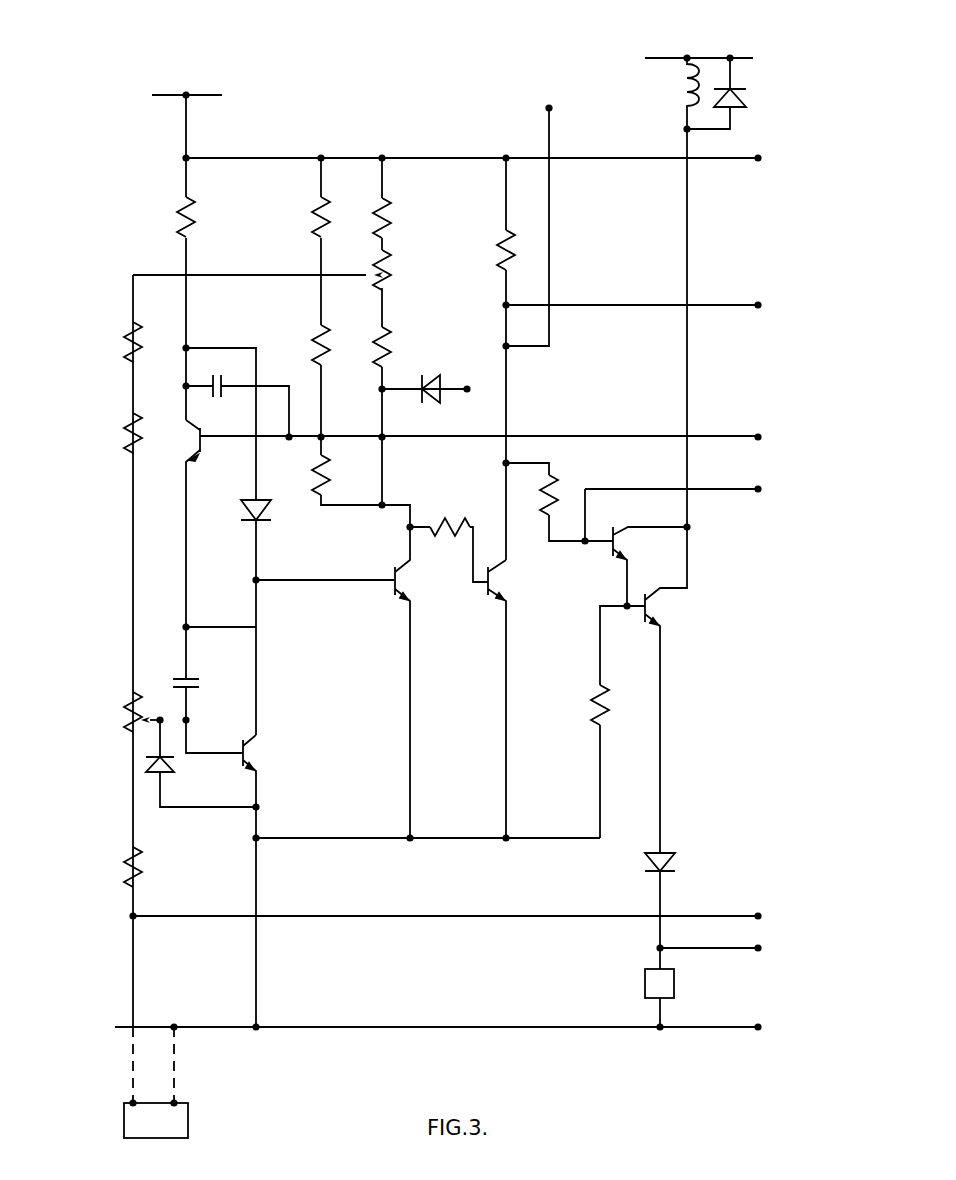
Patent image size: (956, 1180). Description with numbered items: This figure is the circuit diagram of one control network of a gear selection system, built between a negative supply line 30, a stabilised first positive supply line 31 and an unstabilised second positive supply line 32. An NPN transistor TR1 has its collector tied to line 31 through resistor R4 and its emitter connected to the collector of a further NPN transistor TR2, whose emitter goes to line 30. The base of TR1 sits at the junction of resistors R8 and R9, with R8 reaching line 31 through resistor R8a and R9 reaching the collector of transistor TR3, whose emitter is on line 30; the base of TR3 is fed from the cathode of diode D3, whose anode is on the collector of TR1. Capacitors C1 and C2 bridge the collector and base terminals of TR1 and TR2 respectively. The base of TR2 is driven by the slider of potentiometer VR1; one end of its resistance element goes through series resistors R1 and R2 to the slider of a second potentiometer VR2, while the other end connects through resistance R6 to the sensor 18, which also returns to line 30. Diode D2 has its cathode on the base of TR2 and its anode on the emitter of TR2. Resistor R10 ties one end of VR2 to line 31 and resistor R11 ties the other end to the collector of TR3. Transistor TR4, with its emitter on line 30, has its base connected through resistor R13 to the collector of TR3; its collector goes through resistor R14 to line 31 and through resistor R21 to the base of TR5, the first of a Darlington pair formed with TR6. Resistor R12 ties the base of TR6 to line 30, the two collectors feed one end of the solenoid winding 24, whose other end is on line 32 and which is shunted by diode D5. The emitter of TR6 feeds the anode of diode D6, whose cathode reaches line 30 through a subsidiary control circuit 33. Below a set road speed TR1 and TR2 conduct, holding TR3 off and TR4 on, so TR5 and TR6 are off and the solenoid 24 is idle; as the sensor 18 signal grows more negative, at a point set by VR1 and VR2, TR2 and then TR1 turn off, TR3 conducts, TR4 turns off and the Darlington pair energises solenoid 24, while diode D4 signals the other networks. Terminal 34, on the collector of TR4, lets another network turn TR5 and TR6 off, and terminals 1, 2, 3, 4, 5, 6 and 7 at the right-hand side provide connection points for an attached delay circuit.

The first positive supply line 31 is at (187, 95).
The second positive supply line 32 is at (667, 58).
The terminal 34 is at (546, 106).
The solenoid winding 24 is at (676, 94).
The diode D5 is at (744, 104).
The terminal 1 is at (776, 160).
The terminal 3 is at (776, 307).
The terminal 5 is at (776, 439).
The terminal 4 is at (776, 491).
The terminal 7 is at (776, 919).
The terminal 6 is at (776, 950).
The terminal 2 is at (776, 1029).
The resistor R4 is at (179, 225).
The resistor R8a is at (312, 225).
The resistor R8 is at (314, 334).
The resistor R9 is at (330, 480).
The resistor R10 is at (394, 224).
The second potentiometer VR2 is at (394, 282).
The resistor R11 is at (394, 344).
The diode D4 is at (440, 386).
The resistor R1 is at (140, 346).
The resistor R2 is at (140, 440).
The capacitor C1 is at (222, 388).
The NPN transistor TR1 is at (192, 454).
The diode D3 is at (258, 506).
The capacitor C2 is at (200, 684).
The potentiometer VR1 is at (128, 712).
The diode D2 is at (166, 761).
The NPN transistor TR2 is at (254, 762).
The resistance R6 is at (146, 872).
The NPN transistor TR3 is at (402, 595).
The resistor R13 is at (460, 502).
The resistor R14 is at (512, 246).
The NPN transistor TR4 is at (499, 595).
The resistor R21 is at (564, 500).
The NPN transistor TR5 is at (621, 545).
The NPN transistor TR6 is at (655, 616).
The resistor R12 is at (608, 710).
The diode D6 is at (664, 850).
The subsidiary control circuit 33 is at (674, 986).
The negative supply line 30 is at (418, 1027).
The sensor 18 is at (178, 1128).